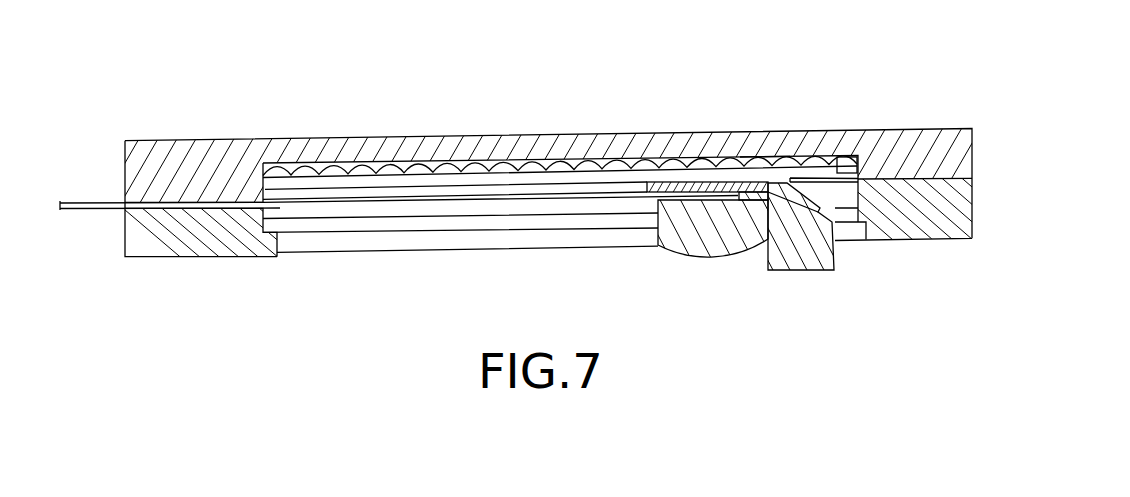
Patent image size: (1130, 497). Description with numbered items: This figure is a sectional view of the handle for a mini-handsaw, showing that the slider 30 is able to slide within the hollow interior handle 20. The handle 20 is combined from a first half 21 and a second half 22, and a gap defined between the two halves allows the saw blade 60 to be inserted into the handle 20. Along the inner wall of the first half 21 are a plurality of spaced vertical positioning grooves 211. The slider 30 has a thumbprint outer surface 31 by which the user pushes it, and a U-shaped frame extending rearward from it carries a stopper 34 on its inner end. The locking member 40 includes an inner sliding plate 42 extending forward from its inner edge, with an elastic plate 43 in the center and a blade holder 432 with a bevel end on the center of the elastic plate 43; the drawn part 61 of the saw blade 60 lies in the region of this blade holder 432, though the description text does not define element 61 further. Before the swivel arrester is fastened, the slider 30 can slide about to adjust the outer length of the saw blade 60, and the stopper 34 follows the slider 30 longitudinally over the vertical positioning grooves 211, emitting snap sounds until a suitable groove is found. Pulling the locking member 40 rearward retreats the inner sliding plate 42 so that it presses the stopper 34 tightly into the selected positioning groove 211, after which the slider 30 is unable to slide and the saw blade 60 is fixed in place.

The handle 20 is at (1006, 156).
The first half 21 is at (918, 153).
The vertical positioning grooves 211 is at (762, 157).
The second half 22 is at (906, 213).
The slider 30 is at (807, 178).
The thumbprint outer surface 31 is at (680, 226).
The stopper 34 is at (845, 157).
The locking member 40 is at (809, 248).
The inner sliding plate 42 is at (676, 160).
The elastic plate 43 is at (560, 130).
The blade holder 432 is at (745, 200).
The saw blade 60 is at (520, 198).
The optical fiber 61 is at (725, 200).